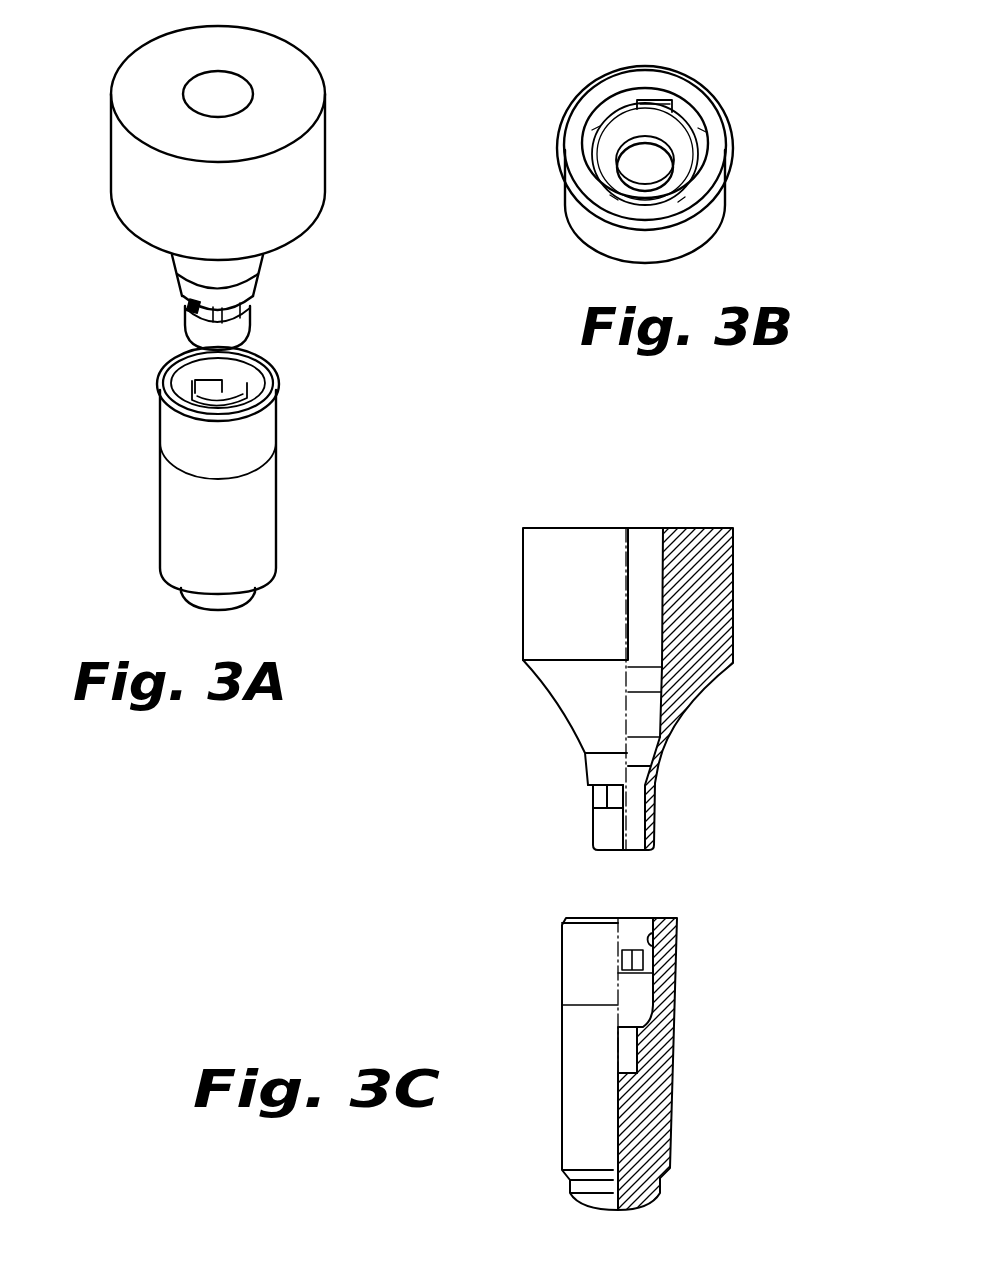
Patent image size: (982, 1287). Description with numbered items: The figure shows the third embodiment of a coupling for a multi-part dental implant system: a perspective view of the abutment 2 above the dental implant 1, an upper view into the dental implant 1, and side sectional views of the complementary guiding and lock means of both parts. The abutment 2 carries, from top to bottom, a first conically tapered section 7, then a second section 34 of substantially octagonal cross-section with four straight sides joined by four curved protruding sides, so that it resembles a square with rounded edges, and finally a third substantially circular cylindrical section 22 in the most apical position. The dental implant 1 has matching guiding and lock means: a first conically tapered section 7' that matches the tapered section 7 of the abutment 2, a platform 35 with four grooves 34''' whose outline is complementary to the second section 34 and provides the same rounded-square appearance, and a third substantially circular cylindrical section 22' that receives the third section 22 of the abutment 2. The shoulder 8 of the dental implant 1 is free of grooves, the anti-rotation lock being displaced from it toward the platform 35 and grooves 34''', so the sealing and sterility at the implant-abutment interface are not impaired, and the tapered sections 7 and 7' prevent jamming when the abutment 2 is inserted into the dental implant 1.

In FIG. 3A, the dental implant 1 is at (178, 497).
In FIG. 3B, the dental implant 1 is at (713, 215).
In FIG. 3C, the dental implant 1 is at (670, 1100).
In FIG. 3A, the abutment 2 is at (303, 98).
In FIG. 3C, the abutment 2 is at (710, 603).
In FIG. 3A, the first conically tapered section 7 is at (249, 267).
In FIG. 3B, the first conically tapered section 7 is at (631, 111).
In FIG. 3C, the first conically tapered section 7 is at (627, 722).
In FIG. 3C, the first conically tapered section 7' is at (688, 952).
In FIG. 3C, the shoulder 8 is at (658, 938).
In FIG. 3A, the third substantially circular cylindrical section 22 is at (267, 316).
In FIG. 3C, the third substantially circular cylindrical section 22 is at (561, 822).
In FIG. 3C, the third substantially circular cylindrical section 22' is at (715, 1034).
In FIG. 3A, the second section 34 is at (158, 290).
In FIG. 3C, the second section 34 is at (542, 781).
In FIG. 3A, the grooves 34''' is at (154, 381).
In FIG. 3B, the grooves 34''' is at (691, 114).
In FIG. 3B, the platform 35 is at (673, 117).